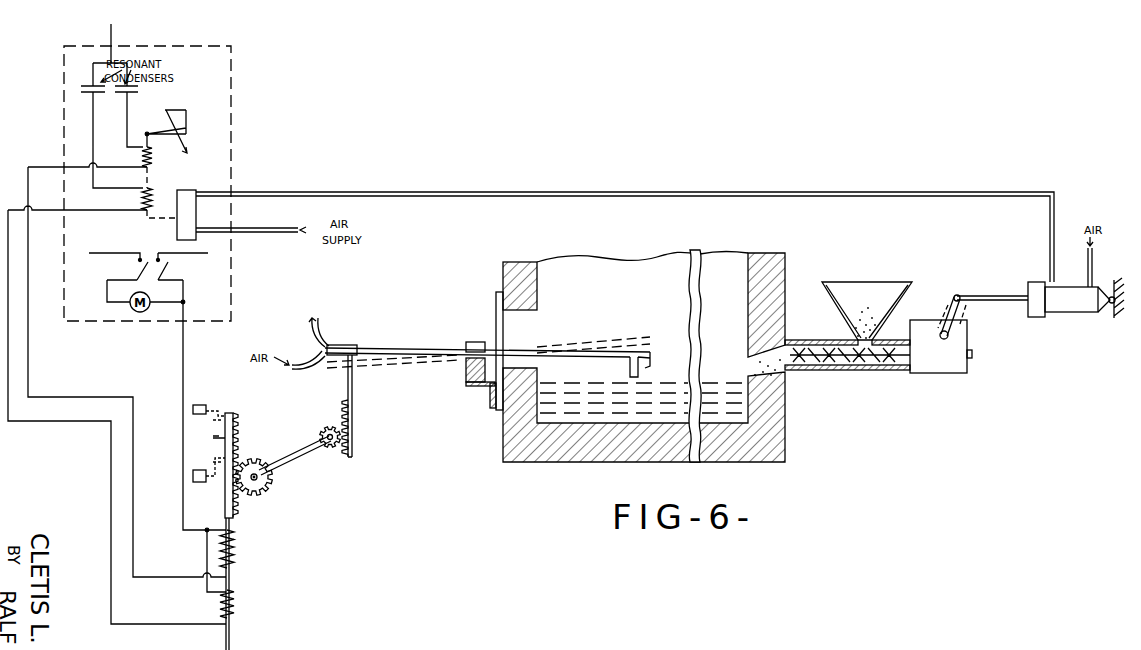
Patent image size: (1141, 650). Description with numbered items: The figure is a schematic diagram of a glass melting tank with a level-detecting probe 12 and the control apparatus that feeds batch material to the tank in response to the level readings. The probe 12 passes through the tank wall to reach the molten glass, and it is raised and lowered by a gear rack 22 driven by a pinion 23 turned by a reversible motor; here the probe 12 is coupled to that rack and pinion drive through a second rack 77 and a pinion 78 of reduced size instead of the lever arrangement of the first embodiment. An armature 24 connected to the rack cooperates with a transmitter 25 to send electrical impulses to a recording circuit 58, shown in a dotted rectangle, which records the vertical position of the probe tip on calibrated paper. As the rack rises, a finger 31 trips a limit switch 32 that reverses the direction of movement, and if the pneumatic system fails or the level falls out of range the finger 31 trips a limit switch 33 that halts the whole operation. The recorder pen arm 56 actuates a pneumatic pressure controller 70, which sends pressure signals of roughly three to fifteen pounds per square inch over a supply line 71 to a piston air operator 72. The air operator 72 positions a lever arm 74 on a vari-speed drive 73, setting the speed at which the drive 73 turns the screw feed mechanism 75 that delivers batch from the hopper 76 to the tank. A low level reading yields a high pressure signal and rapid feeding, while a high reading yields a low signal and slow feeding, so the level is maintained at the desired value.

The probe 12 is at (603, 330).
The gear rack 22 is at (239, 445).
The pinion 23 is at (270, 490).
The armature 24 is at (237, 529).
The transmitter 25 is at (235, 594).
The finger 31 is at (213, 441).
The limit switch 32 is at (200, 405).
The limit switch 33 is at (198, 482).
The pen arm 56 is at (186, 141).
The recording circuit 58 is at (232, 283).
The pneumatic pressure controller 70 is at (196, 210).
The supply line 71 is at (310, 192).
The piston air operator 72 is at (1068, 312).
The vari-speed drive 73 is at (967, 338).
The lever arm 74 is at (958, 294).
The screw feed mechanism 75 is at (860, 362).
The hopper 76 is at (877, 268).
The second rack 77 is at (350, 460).
The pinion 78 is at (328, 425).